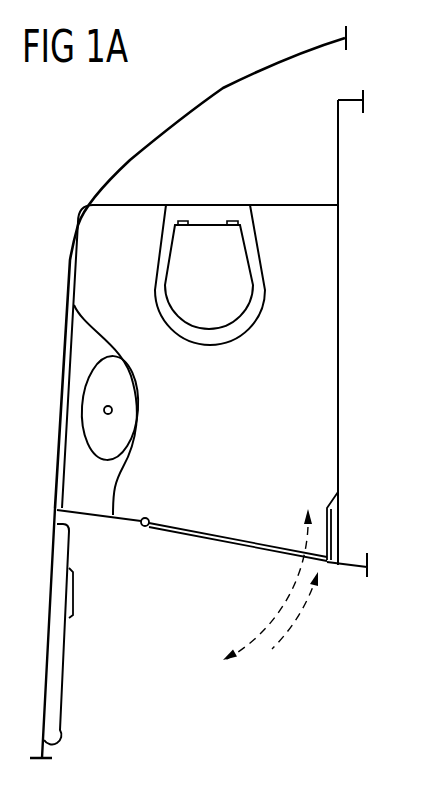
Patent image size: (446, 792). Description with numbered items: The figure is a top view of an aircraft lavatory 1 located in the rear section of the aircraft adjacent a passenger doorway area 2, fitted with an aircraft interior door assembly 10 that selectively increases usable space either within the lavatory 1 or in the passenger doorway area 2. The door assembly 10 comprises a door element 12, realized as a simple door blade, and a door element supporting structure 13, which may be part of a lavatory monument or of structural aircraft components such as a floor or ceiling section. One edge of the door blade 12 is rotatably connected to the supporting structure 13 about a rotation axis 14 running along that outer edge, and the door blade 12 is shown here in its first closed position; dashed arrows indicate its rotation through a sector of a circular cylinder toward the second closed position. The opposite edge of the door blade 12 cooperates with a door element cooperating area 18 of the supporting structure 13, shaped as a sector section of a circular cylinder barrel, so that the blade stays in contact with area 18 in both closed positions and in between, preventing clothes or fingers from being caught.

The lavatory 1 is at (243, 430).
The passenger doorway area 2 is at (172, 691).
The aircraft interior door assembly 10 is at (234, 550).
The door element 12 is at (250, 538).
The door element supporting structure 13 is at (133, 532).
The rotation axis 14 is at (146, 518).
The door element cooperating area 18 is at (335, 528).